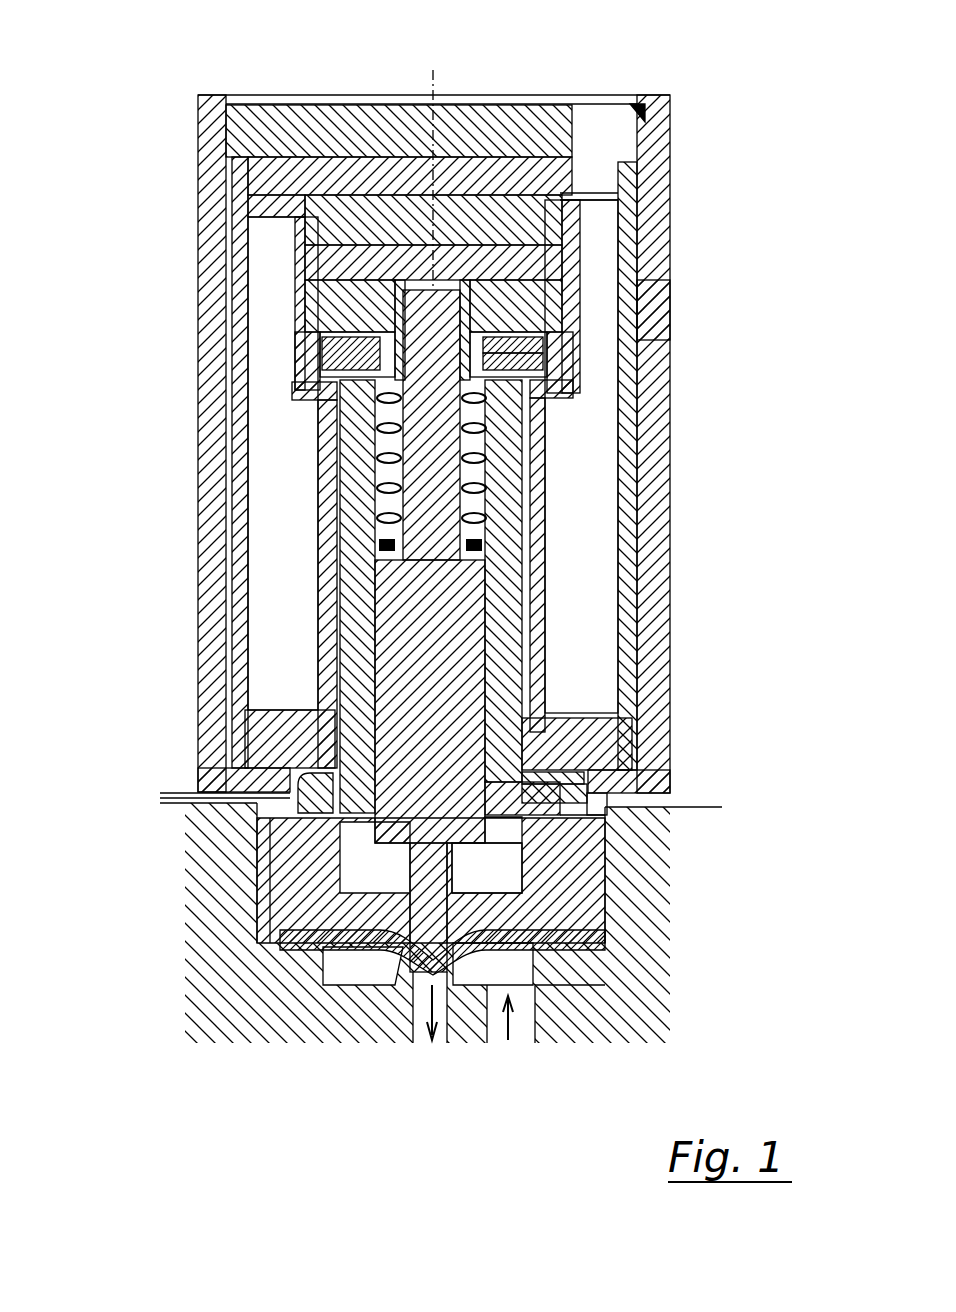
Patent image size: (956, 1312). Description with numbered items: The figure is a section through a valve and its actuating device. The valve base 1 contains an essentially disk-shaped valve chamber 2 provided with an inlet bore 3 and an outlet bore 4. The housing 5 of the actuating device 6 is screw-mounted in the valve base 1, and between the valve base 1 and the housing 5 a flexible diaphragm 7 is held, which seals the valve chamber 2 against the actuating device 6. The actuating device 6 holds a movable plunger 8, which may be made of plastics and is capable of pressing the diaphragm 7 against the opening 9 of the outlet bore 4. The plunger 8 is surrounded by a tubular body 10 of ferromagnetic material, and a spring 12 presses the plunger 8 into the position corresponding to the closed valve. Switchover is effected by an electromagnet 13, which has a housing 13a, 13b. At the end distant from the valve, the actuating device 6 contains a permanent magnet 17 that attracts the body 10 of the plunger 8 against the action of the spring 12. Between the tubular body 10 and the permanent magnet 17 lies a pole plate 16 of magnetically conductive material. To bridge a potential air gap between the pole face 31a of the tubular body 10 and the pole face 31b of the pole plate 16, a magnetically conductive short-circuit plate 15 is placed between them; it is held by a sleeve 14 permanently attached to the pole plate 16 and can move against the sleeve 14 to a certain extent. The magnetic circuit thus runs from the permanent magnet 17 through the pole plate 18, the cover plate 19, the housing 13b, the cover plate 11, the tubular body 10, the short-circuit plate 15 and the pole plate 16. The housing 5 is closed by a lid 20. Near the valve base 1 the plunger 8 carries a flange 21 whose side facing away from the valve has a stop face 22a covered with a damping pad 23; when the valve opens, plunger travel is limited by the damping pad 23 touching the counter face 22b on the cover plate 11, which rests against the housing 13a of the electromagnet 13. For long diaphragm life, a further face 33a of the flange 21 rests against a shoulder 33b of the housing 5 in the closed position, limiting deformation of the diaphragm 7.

The valve base 1 is at (222, 932).
The valve chamber 2 is at (345, 968).
The inlet bore 3 is at (521, 1030).
The outlet bore 4 is at (440, 1030).
The housing 5 is at (655, 312).
The actuating device 6 is at (668, 476).
The flexible diaphragm 7 is at (560, 1005).
The plunger 8 is at (272, 822).
The opening 9 is at (428, 974).
The tubular body 10 is at (512, 495).
The cover plate 11 is at (283, 742).
The spring 12 is at (470, 398).
The electromagnet 13 is at (287, 455).
The housing 13a is at (326, 580).
The housing 13b is at (238, 572).
The sleeve 14 is at (548, 362).
The magnetically conductive short-circuit plate 15 is at (545, 348).
The pole plate 16 is at (332, 300).
The permanent magnet 17 is at (546, 262).
The pole plate 18 is at (540, 236).
The cover plate 19 is at (472, 172).
The lid 20 is at (372, 125).
The flange 21 is at (330, 777).
The stop face 22a is at (606, 812).
The counter face 22b is at (540, 768).
The damping pad 23 is at (602, 772).
The pole face 31a is at (334, 388).
The pole face 31b is at (338, 352).
The further face 33a is at (604, 822).
The shoulder 33b is at (548, 826).